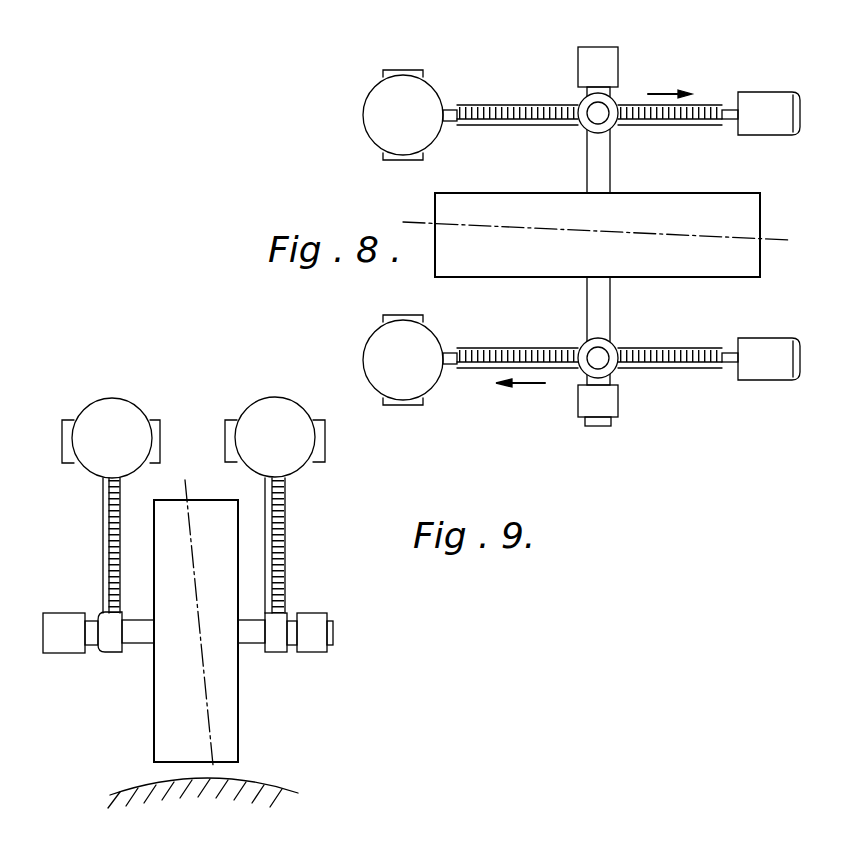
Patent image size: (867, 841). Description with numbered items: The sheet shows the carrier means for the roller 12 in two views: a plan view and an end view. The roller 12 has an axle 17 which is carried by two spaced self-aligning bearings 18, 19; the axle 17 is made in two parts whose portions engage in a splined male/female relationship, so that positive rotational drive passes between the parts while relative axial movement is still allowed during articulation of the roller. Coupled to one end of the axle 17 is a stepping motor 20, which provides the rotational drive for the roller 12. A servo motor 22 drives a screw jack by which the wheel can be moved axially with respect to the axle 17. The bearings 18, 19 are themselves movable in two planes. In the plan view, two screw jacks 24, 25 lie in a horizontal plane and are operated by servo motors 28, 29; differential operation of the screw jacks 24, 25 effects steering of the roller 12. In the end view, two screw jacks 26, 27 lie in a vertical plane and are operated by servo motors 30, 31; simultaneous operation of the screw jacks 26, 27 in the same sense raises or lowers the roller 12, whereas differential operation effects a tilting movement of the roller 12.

In FIG. 8, the roller 12 is at (762, 198).
In FIG. 9, the roller 12 is at (195, 498).
In FIG. 8, the axle 17 is at (610, 163).
In FIG. 9, the axle 17 is at (147, 636).
In FIG. 8, the self-aligning bearing 18 is at (585, 350).
In FIG. 9, the self-aligning bearing 18 is at (112, 647).
In FIG. 8, the self-aligning bearing 19 is at (585, 105).
In FIG. 9, the self-aligning bearing 19 is at (277, 647).
In FIG. 8, the stepping motor 20 is at (618, 60).
In FIG. 9, the stepping motor 20 is at (68, 643).
In FIG. 8, the servo motor 22 is at (613, 401).
In FIG. 9, the servo motor 22 is at (318, 618).
In FIG. 8, the screw jack 24 is at (707, 100).
In FIG. 8, the screw jack 25 is at (652, 350).
In FIG. 9, the screw jack 26 is at (103, 512).
In FIG. 9, the screw jack 27 is at (285, 570).
In FIG. 8, the servo motor 28 is at (443, 95).
In FIG. 8, the servo motor 29 is at (438, 342).
In FIG. 9, the servo motor 30 is at (120, 412).
In FIG. 9, the servo motor 31 is at (290, 462).